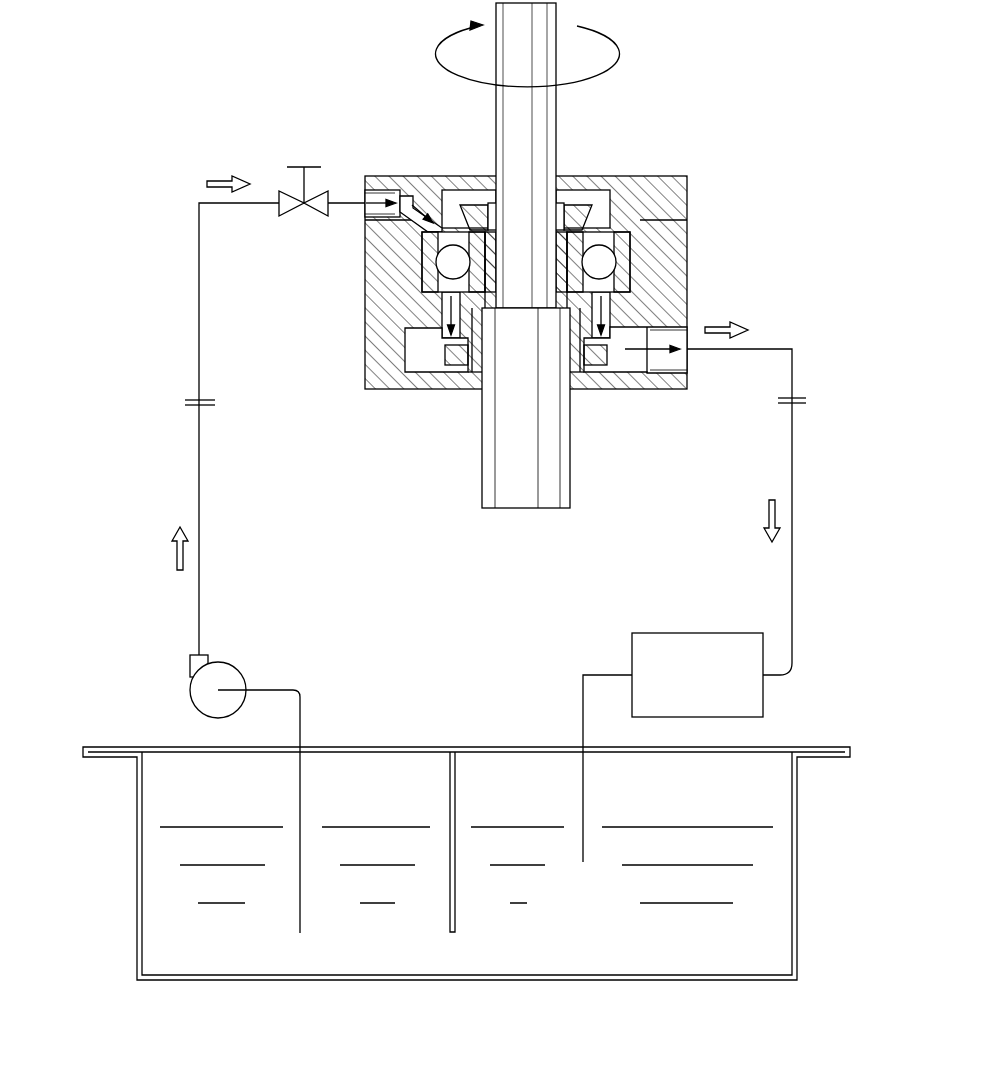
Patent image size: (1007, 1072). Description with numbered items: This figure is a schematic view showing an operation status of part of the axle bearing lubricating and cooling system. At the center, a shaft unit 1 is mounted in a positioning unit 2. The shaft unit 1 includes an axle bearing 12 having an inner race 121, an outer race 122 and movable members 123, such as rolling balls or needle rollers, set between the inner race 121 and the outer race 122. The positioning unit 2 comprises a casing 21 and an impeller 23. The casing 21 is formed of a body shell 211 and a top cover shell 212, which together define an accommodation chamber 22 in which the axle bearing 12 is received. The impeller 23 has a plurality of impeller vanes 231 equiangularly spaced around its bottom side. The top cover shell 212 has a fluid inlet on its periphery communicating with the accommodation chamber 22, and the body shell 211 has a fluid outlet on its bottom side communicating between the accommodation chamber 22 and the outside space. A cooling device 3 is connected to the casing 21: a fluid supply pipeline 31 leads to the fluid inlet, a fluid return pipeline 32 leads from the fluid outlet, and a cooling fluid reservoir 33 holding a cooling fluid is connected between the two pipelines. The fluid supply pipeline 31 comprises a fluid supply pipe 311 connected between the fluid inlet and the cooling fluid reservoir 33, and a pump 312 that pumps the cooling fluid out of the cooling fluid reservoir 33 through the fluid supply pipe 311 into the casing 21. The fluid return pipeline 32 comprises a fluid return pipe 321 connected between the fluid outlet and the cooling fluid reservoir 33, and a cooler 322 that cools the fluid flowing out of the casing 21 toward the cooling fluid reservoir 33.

The shaft unit 1 is at (487, 124).
The positioning unit 2 is at (592, 127).
The axle bearing 12 is at (414, 282).
The inner race 121 is at (478, 277).
The outer race 122 is at (428, 260).
The movable members 123 is at (450, 264).
The casing 21 is at (696, 237).
The body shell 211 is at (364, 345).
The top cover shell 212 is at (434, 221).
The accommodation chamber 22 is at (598, 190).
The impeller 23 is at (441, 362).
The impeller vanes 231 is at (455, 362).
The cooling device 3 is at (804, 465).
The fluid supply pipeline 31 is at (181, 351).
The fluid supply pipe 311 is at (199, 440).
The pump 312 is at (218, 667).
The fluid return pipeline 32 is at (797, 561).
The fluid return pipe 321 is at (790, 440).
The cooler 322 is at (687, 640).
The cooling fluid reservoir 33 is at (793, 830).